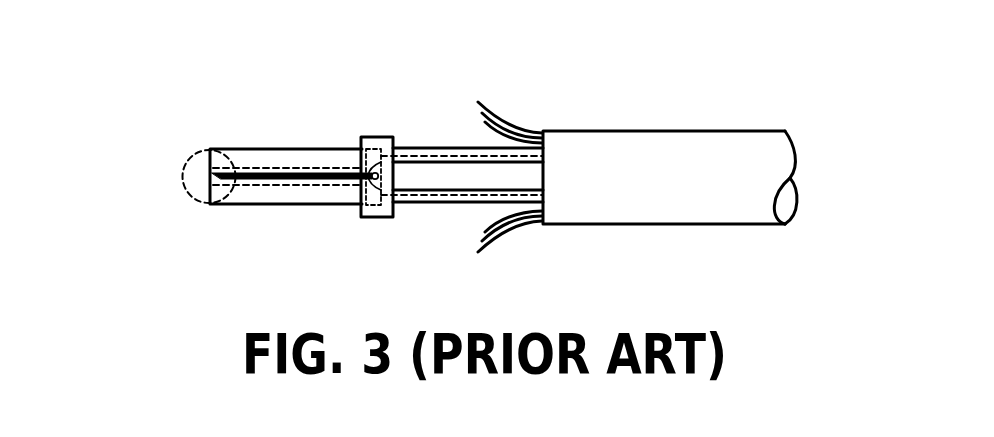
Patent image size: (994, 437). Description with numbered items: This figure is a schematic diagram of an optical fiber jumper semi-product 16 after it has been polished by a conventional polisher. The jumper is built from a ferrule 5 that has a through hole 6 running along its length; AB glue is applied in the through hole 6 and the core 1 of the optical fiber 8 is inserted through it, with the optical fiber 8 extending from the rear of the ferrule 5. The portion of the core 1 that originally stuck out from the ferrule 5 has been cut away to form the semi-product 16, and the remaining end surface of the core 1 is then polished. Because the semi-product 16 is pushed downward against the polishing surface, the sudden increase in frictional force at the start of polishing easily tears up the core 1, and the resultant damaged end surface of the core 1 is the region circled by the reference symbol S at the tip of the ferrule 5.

The core 1 is at (247, 170).
The ferrule 5 is at (292, 158).
The through hole 6 is at (435, 156).
The optical fiber 8 is at (668, 159).
The torn-up end surface region of the core S is at (183, 175).
The semi-product of the jumper 16 is at (862, 32).